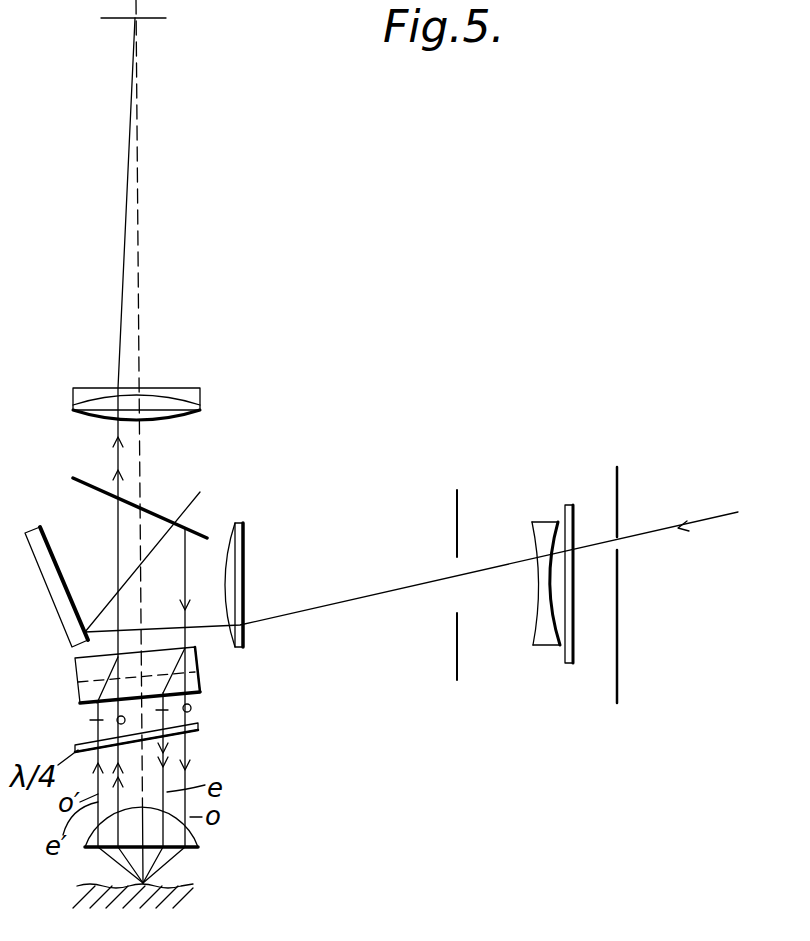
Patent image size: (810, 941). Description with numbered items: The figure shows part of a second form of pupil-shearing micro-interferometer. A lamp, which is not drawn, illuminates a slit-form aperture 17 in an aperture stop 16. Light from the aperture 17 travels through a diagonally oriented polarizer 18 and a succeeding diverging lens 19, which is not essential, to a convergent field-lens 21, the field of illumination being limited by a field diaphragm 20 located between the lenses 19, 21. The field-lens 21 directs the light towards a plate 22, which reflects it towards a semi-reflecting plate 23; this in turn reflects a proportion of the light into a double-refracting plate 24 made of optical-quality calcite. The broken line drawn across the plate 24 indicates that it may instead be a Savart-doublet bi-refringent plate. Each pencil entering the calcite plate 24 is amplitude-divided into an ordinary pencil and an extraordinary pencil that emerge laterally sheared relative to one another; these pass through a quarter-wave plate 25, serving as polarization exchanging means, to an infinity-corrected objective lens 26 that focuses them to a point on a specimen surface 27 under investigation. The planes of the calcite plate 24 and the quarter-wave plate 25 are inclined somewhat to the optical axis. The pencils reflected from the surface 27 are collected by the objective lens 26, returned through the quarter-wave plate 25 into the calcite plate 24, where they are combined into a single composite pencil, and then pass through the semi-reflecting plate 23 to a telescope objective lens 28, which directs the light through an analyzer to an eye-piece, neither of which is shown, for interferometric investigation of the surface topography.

The aperture stop 16 is at (618, 625).
The slit-form aperture 17 is at (620, 538).
The polarizer 18 is at (575, 648).
The diverging lens 19 is at (535, 642).
The field diaphragm 20 is at (457, 510).
The convergent field-lens 21 is at (243, 520).
The plate 22 is at (67, 623).
The semi-reflecting plate 23 is at (147, 498).
The double-refracting plate 24 is at (78, 680).
The quarter-wave plate 25 is at (203, 722).
The infinity-corrected objective lens 26 is at (198, 847).
The specimen surface 27 is at (188, 883).
The telescope objective lens 28 is at (195, 393).